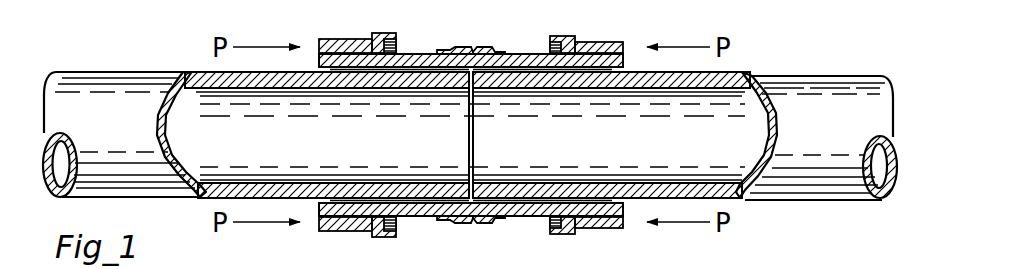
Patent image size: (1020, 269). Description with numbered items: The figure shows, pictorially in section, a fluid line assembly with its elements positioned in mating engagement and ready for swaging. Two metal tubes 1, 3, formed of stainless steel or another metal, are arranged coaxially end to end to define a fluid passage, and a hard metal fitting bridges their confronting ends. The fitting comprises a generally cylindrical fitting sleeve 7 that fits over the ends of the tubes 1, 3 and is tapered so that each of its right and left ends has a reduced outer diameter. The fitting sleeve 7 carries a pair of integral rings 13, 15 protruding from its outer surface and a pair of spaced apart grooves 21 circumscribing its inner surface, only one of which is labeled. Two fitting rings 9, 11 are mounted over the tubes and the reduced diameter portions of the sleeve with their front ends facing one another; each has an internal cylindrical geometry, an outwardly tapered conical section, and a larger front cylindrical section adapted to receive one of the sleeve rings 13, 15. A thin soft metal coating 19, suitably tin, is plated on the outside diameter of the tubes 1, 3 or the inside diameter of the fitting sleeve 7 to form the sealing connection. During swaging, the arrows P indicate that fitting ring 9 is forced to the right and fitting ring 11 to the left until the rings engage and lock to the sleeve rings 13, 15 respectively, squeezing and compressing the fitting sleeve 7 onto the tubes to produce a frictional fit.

The tube 1 is at (128, 72).
The tube 3 is at (810, 76).
The fitting sleeve 7 is at (517, 46).
The fitting ring 9 is at (352, 38).
The fitting ring 11 is at (595, 40).
The integral ring 13 is at (458, 50).
The integral ring 15 is at (480, 48).
The soft metal coating 19 is at (416, 70).
The groove 21 is at (573, 70).